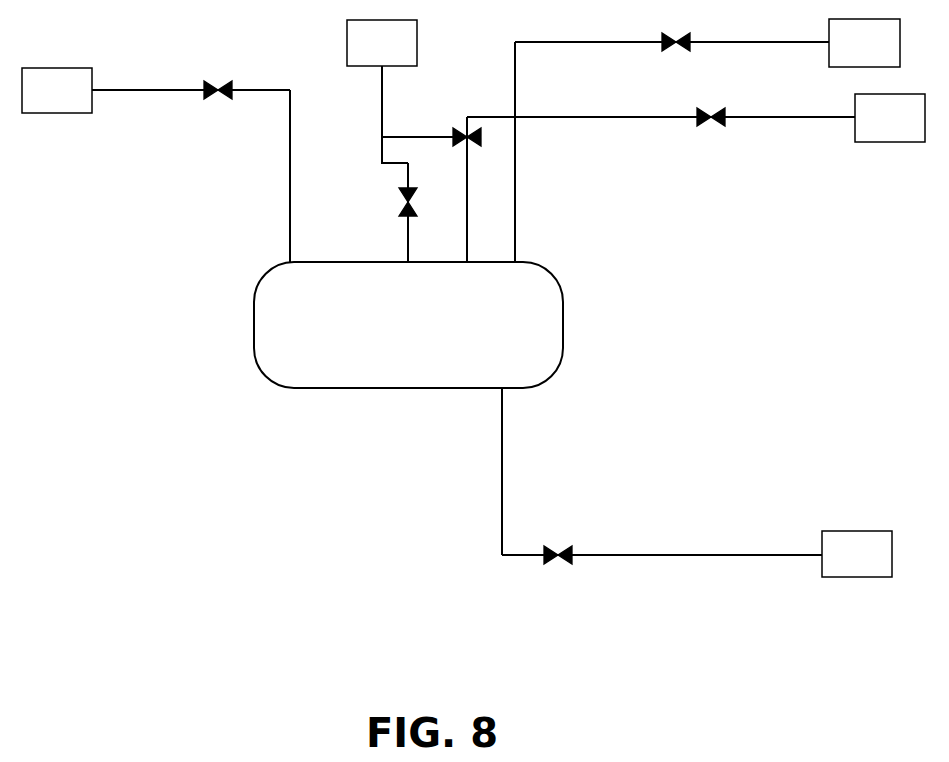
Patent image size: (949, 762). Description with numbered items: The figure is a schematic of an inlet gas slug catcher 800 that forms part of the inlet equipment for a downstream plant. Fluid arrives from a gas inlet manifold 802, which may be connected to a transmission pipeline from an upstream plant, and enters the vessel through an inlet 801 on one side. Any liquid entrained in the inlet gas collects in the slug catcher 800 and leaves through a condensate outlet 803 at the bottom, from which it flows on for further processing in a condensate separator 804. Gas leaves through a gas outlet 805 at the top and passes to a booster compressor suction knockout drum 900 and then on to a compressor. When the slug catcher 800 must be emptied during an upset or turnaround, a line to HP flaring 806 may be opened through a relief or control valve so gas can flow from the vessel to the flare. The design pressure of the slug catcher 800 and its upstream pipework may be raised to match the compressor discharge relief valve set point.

The inlet gas slug catcher 800 is at (387, 390).
The inlet 801 is at (290, 262).
The gas inlet manifold 802 is at (156, 90).
The condensate outlet 803 is at (498, 391).
The condensate separator 804 is at (697, 554).
The gas outlet 805 is at (410, 262).
The HP flaring 806 is at (636, 91).
The booster compressor suction knockout drum 900 is at (707, 43).